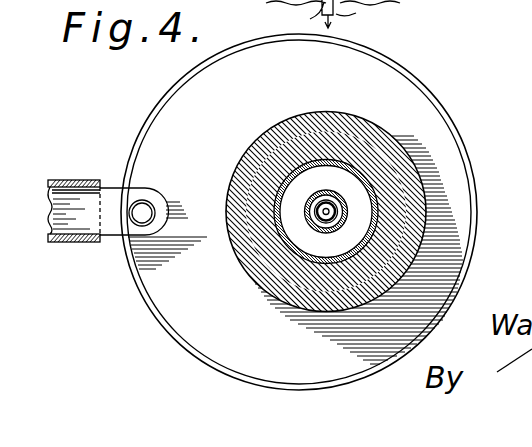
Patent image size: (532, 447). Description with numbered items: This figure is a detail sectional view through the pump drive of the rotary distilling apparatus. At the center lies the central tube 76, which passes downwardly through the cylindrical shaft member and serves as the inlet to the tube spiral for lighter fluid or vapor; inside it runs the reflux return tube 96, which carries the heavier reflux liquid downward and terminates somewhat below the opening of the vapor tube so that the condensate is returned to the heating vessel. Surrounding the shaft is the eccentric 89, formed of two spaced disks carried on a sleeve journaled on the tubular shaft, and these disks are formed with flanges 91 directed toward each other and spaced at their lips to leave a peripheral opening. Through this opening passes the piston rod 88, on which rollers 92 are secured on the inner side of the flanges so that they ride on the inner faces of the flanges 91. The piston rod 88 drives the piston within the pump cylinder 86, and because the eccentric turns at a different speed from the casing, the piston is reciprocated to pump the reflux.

The central tube 76 is at (336, 160).
The pump cylinder 86 is at (72, 180).
The piston rod 88 is at (110, 203).
The eccentric 89 is at (419, 118).
The flanges 91 is at (460, 139).
The rollers 92 is at (139, 212).
The reflux return tube 96 is at (336, 5).